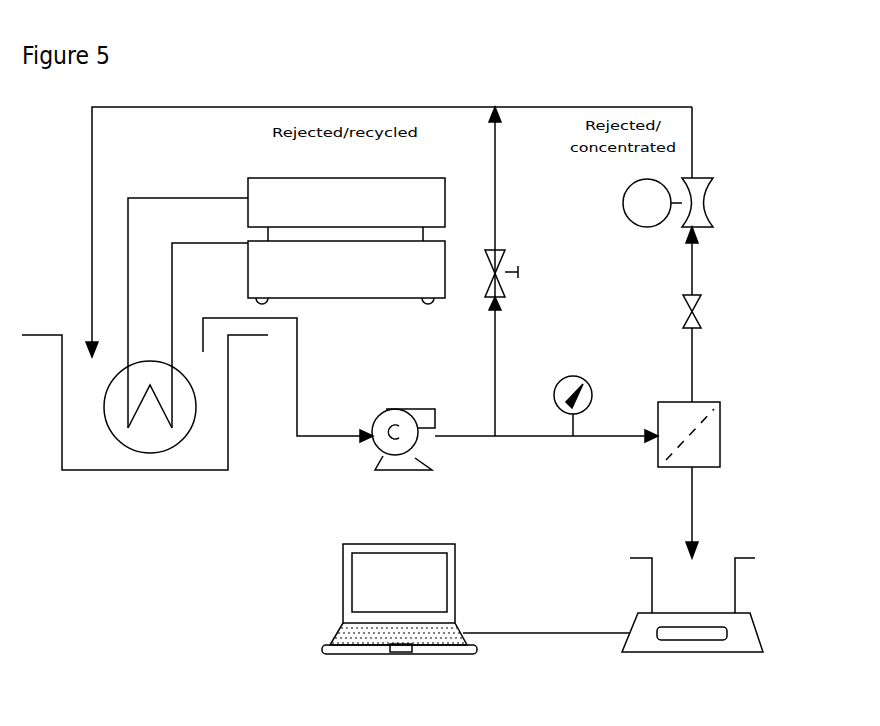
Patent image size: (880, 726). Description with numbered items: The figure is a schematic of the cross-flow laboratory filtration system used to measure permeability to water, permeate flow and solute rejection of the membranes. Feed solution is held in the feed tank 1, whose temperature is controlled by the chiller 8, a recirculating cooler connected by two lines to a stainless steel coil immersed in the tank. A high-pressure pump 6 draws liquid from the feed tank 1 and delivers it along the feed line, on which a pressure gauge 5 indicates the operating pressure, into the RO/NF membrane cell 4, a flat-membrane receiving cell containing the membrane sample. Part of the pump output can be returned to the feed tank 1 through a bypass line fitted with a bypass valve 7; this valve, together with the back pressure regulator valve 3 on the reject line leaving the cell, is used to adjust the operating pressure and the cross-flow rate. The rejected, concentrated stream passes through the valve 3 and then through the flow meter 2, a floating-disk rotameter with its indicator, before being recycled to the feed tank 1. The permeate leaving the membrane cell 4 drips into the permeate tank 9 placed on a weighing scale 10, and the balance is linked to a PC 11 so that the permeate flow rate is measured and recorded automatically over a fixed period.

The feed tank 1 is at (145, 424).
The flow meter 2 is at (701, 175).
The valve 3 is at (726, 322).
The RO/NF membrane cell 4 is at (753, 480).
The pressure gauge 5 is at (561, 446).
The pump 6 is at (392, 455).
The bypass valve 7 is at (539, 271).
The chiller 8 is at (346, 241).
The permeate tank 9 is at (739, 580).
The weighing scale 10 is at (680, 653).
The PC 11 is at (465, 599).